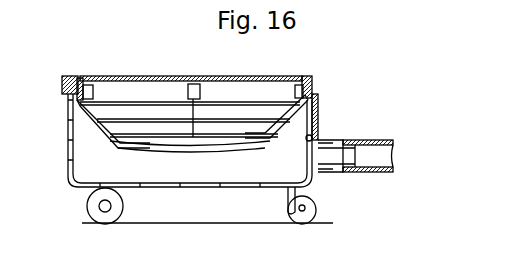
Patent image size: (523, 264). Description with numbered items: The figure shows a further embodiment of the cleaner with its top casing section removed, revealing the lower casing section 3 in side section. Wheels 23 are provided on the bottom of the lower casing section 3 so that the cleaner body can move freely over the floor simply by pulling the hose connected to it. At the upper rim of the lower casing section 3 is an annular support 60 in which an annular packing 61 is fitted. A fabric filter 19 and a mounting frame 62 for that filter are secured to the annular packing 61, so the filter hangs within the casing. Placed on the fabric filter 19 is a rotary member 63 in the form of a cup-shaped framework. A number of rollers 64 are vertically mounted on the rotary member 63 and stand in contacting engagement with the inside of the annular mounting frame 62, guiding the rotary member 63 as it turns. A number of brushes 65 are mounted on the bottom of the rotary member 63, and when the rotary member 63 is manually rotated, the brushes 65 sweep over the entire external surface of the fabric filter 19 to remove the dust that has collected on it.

The lower casing section 3 is at (318, 108).
The fabric filter 19 is at (193, 152).
The wheels 23 is at (97, 212).
The annular support 60 is at (64, 93).
The annular packing 61 is at (62, 76).
The mounting frame 62 is at (67, 101).
The rotary member 63 is at (155, 76).
The rollers 64 is at (93, 87).
The brushes 65 is at (100, 128).